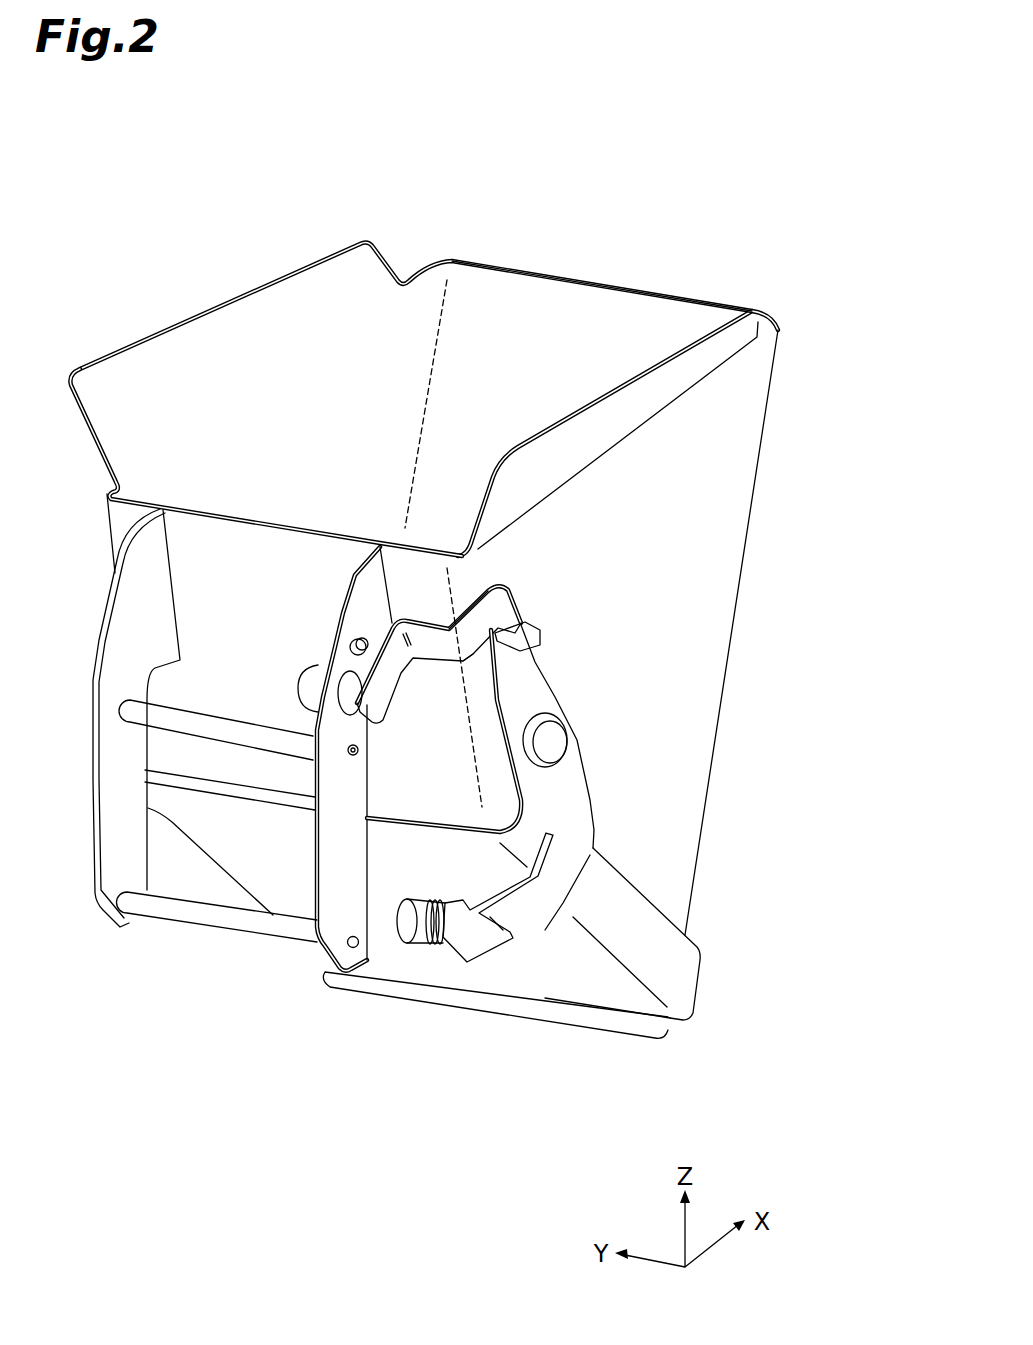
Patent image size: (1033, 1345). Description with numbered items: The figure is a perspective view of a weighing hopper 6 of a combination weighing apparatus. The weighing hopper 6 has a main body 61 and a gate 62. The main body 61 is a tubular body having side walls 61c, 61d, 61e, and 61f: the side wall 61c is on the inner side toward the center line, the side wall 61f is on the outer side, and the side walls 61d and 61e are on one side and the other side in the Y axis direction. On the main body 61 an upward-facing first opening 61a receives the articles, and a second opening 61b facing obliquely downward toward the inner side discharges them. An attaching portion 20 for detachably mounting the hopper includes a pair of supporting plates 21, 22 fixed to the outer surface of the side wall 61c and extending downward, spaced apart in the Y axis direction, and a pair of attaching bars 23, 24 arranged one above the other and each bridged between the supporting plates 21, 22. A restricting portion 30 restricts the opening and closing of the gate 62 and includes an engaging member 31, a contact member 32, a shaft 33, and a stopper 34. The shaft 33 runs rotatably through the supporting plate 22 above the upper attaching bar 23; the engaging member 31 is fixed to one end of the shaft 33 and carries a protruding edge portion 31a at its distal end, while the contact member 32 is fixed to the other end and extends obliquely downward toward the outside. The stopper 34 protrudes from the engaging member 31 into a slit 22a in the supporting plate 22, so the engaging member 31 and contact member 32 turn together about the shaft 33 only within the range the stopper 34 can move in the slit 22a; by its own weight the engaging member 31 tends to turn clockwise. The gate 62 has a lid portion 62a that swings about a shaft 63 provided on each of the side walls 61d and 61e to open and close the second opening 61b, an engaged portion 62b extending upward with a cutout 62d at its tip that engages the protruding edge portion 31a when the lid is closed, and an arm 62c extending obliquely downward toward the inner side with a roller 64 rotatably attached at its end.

The weighing hopper 6 is at (449, 600).
The main body 61 is at (449, 635).
The first opening 61a is at (492, 296).
The second opening 61b is at (516, 962).
The side wall 61c is at (207, 598).
The side wall 61d is at (724, 487).
The side wall 61e is at (136, 342).
The side wall 61f is at (648, 294).
The gate 62 is at (581, 846).
The lid portion 62a is at (615, 990).
The engaged portion 62b is at (530, 697).
The arm 62c is at (582, 864).
The cutout 62d is at (545, 635).
The shaft 63 is at (552, 743).
The roller 64 is at (410, 922).
The attaching portion 20 is at (227, 783).
The supporting plate 21 is at (115, 843).
The supporting plate 22 is at (327, 780).
The slit 22a is at (340, 650).
The attaching bar 23 is at (217, 728).
The attaching bar 24 is at (217, 953).
The restricting portion 30 is at (434, 662).
The engaging member 31 is at (475, 630).
The protruding edge portion 31a is at (537, 630).
The contact member 32 is at (302, 676).
The shaft 33 is at (338, 710).
The stopper 34 is at (358, 661).